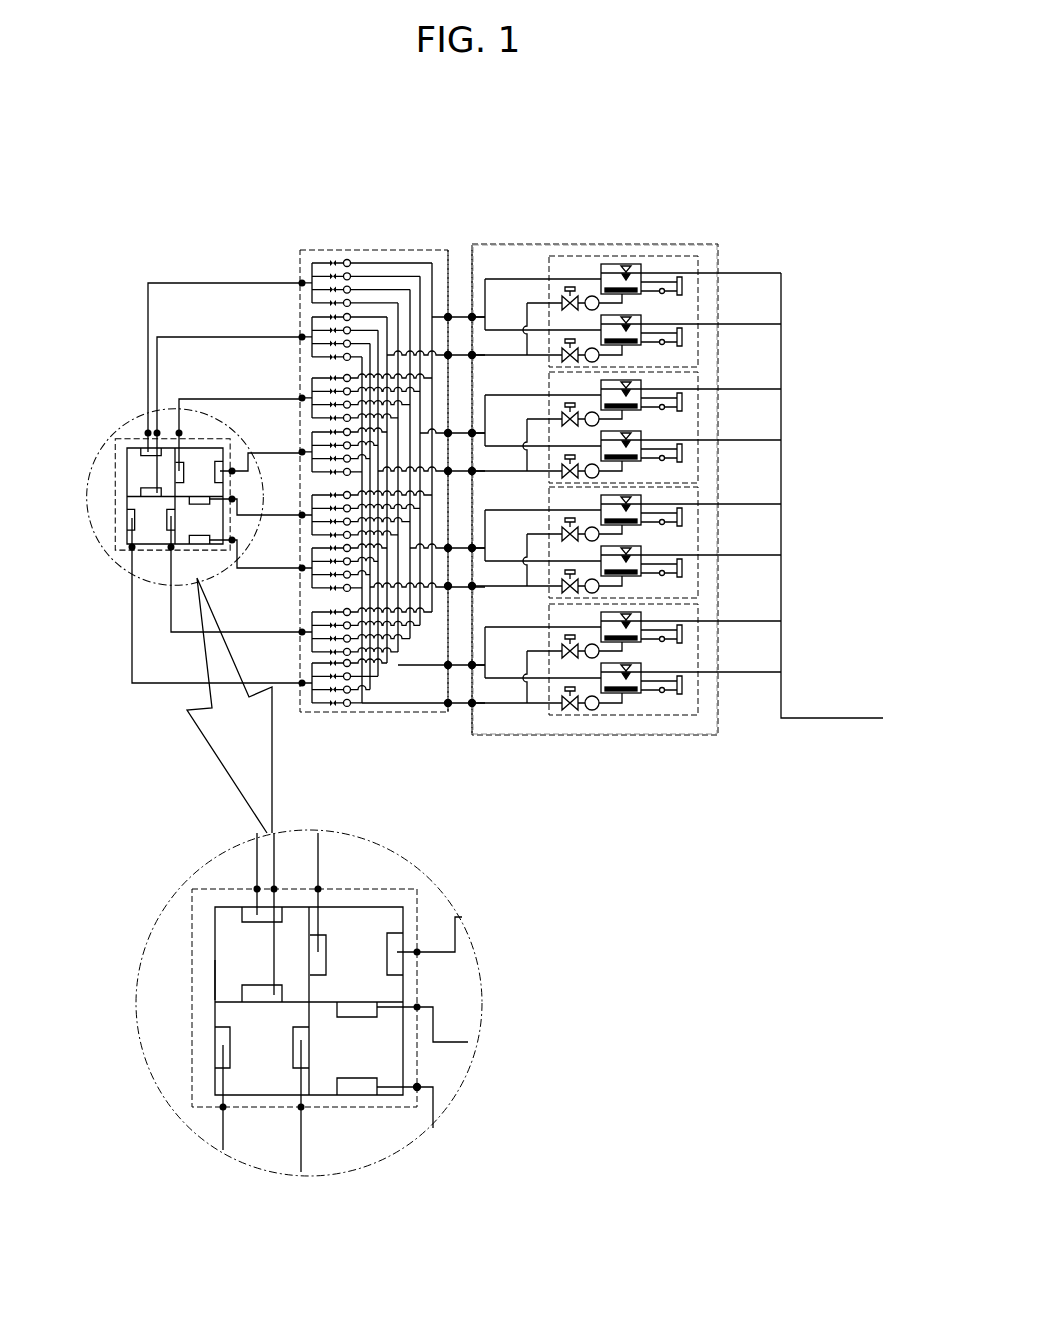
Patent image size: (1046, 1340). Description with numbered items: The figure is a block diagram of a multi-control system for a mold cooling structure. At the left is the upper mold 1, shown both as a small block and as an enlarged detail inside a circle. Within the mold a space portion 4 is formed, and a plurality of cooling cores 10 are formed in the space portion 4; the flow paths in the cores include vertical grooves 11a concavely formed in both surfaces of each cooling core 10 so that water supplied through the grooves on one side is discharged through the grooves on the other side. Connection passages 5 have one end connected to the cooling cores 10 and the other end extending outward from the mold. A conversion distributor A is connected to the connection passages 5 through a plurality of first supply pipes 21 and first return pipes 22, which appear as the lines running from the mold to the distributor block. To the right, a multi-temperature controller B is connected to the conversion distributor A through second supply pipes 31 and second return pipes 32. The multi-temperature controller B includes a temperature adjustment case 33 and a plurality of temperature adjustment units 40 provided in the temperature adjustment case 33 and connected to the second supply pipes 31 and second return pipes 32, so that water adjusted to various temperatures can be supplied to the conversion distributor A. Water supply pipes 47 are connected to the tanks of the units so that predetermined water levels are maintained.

The upper mold 1 is at (98, 462).
The space portion 4 is at (215, 978).
The connection passage 5 is at (410, 930).
The cooling core 10 is at (225, 905).
The vertical groove 11a is at (215, 1040).
The first supply pipe 21 is at (180, 336).
The first return pipe 22 is at (196, 283).
The second supply pipe 31 is at (503, 270).
The second return pipe 32 is at (466, 272).
The temperature adjustment case 33 is at (652, 736).
The temperature adjustment unit 40 is at (610, 250).
The water supply pipe 47 is at (790, 697).
The conversion distributor A is at (381, 248).
The multi-temperature controller B is at (687, 234).